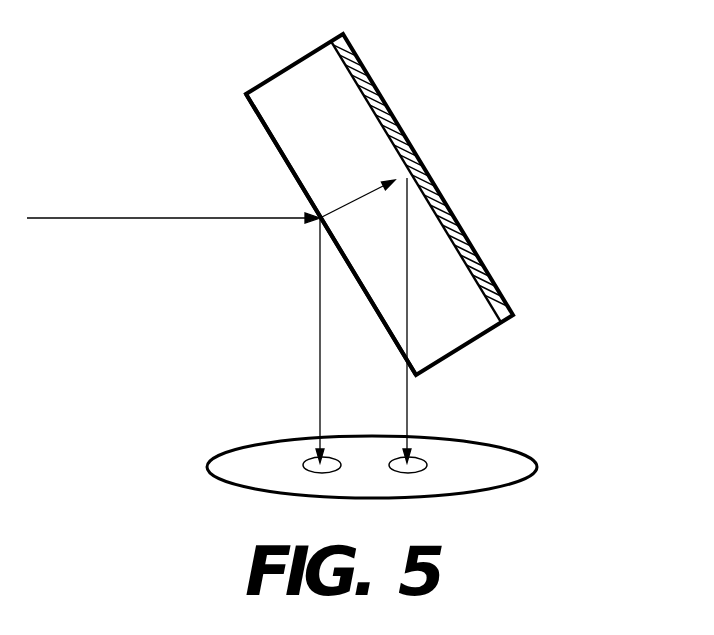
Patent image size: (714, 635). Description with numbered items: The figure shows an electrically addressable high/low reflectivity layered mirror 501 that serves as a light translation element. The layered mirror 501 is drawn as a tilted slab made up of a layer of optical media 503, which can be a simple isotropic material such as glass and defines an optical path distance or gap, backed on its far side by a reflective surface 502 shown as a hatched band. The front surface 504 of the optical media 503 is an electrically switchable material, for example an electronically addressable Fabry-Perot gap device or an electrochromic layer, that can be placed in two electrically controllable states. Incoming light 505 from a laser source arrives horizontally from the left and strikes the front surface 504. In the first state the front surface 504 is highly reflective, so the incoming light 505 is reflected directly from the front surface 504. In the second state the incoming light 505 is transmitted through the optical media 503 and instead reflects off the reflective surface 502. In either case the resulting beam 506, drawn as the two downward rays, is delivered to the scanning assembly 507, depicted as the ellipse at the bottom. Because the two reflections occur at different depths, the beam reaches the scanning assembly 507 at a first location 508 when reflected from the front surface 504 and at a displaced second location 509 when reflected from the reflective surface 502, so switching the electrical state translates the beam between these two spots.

The electrically addressable high/low reflectivity layered mirror 501 is at (558, 169).
The reflective surface 502 is at (378, 82).
The optical media 503 is at (312, 78).
The front surface 504 is at (290, 167).
The incoming light 505 is at (145, 217).
The resulting beam 506 is at (407, 335).
The scanning assembly 507 is at (207, 472).
The first location 508 is at (303, 462).
The second location 509 is at (423, 462).